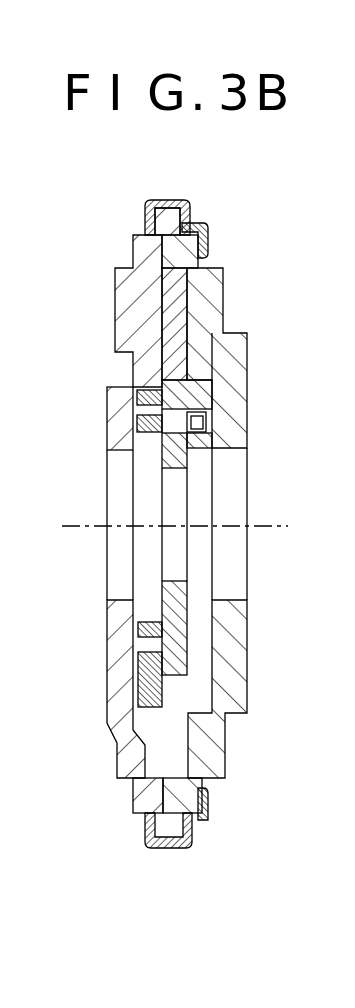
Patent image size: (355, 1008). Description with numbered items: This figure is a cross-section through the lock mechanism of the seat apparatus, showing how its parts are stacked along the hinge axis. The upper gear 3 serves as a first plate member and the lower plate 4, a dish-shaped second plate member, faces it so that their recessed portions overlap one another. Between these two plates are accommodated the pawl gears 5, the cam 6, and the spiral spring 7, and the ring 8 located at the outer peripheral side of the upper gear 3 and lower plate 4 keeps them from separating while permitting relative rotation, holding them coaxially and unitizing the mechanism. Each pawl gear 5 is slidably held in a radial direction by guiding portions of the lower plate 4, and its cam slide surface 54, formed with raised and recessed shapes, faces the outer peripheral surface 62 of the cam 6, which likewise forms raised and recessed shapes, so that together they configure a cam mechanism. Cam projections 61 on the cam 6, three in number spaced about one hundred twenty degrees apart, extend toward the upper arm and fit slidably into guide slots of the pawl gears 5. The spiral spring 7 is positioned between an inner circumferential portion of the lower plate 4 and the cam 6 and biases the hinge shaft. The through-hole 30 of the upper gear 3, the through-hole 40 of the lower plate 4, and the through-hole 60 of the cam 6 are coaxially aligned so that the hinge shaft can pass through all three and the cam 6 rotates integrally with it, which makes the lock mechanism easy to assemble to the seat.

The upper gear 3 is at (223, 282).
The lower plate 4 is at (133, 257).
The pawl gear 5 is at (208, 355).
The cam 6 is at (173, 468).
The spiral spring 7 is at (150, 707).
The ring 8 is at (175, 198).
The through-hole 30 is at (220, 573).
The through-hole 40 is at (120, 582).
The cam slide surface 54 is at (178, 386).
The through-hole 60 is at (173, 487).
The cam projection 61 is at (206, 424).
The outer peripheral surface 62 is at (200, 385).